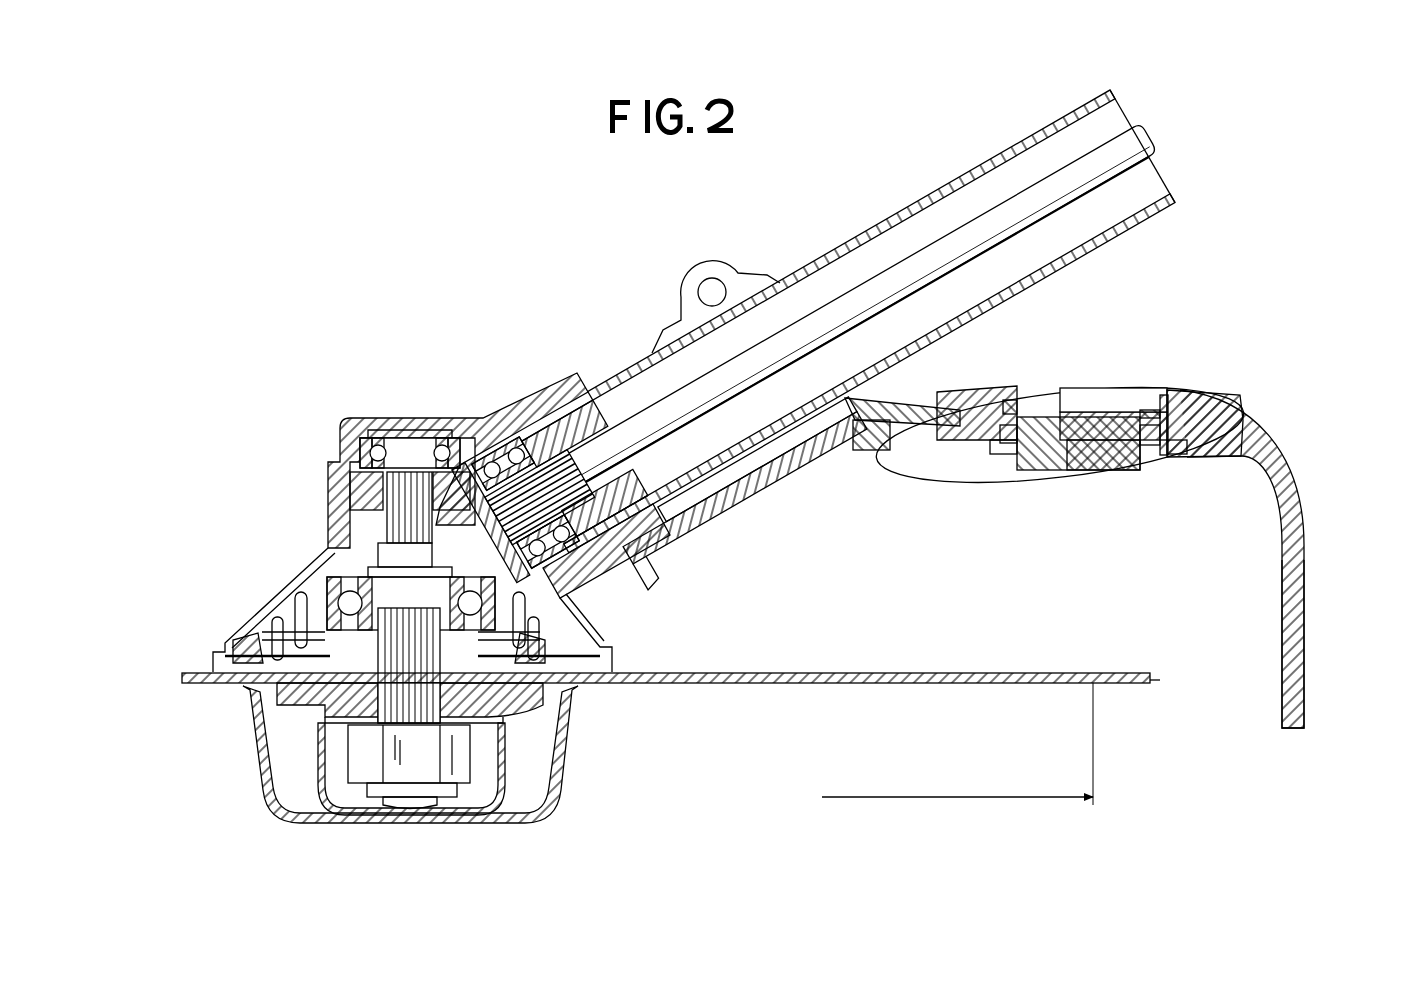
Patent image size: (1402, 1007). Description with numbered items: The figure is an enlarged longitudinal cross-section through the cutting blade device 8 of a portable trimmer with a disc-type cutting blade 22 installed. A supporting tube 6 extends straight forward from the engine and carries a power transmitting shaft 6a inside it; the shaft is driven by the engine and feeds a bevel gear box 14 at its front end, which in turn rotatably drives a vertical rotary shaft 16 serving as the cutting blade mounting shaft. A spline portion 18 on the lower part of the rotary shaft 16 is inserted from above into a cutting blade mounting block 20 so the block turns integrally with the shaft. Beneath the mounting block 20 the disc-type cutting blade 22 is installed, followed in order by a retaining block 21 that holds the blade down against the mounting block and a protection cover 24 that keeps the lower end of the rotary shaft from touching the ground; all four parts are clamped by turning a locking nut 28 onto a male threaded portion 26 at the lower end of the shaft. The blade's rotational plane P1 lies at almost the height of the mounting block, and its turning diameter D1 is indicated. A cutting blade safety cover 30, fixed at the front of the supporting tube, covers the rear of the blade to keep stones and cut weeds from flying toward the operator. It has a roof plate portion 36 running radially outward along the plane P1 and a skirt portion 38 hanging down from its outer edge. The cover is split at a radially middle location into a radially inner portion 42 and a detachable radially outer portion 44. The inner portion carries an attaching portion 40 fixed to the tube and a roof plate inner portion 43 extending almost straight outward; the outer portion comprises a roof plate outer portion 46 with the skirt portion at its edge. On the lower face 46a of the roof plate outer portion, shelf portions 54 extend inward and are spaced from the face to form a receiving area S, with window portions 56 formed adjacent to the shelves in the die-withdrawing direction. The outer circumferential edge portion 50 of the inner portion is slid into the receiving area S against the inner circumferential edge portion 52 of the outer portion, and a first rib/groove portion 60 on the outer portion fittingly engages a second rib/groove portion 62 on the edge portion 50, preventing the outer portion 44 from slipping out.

The supporting tube 6 is at (985, 158).
The power transmitting shaft 6a is at (935, 255).
The cutting blade device 8 is at (452, 398).
The bevel gear box 14 is at (380, 415).
The rotary shaft 16 is at (405, 556).
The spline portion 18 is at (410, 672).
The cutting blade mounting block 20 is at (560, 690).
The retaining block 21 is at (485, 703).
The disc-type cutting blade 22 is at (905, 685).
The protection cover 24 is at (565, 783).
The male threaded portion 26 is at (425, 812).
The locking nut 28 is at (540, 818).
The cutting blade safety cover 30 is at (1213, 392).
The roof plate portion 36 is at (1022, 378).
The skirt portion 38 is at (1325, 675).
The attaching portion 40 is at (762, 512).
The radially inner portion 42 is at (905, 416).
The roof plate inner portion 43 is at (870, 452).
The radially outer portion 44 is at (1288, 454).
The roof plate outer portion 46 is at (1112, 400).
The lower face 46a is at (1110, 480).
The outer circumferential edge portion 50 is at (1192, 428).
The inner circumferential edge portion 52 is at (970, 404).
The shelf portion 54 is at (1065, 475).
The window portion 56 is at (1163, 410).
The first rib/groove portion 60 is at (960, 448).
The second rib/groove portion 62 is at (1005, 395).
The receiving area S is at (1130, 398).
The rotational plane P1 is at (1175, 682).
The turning diameter D1 is at (938, 749).